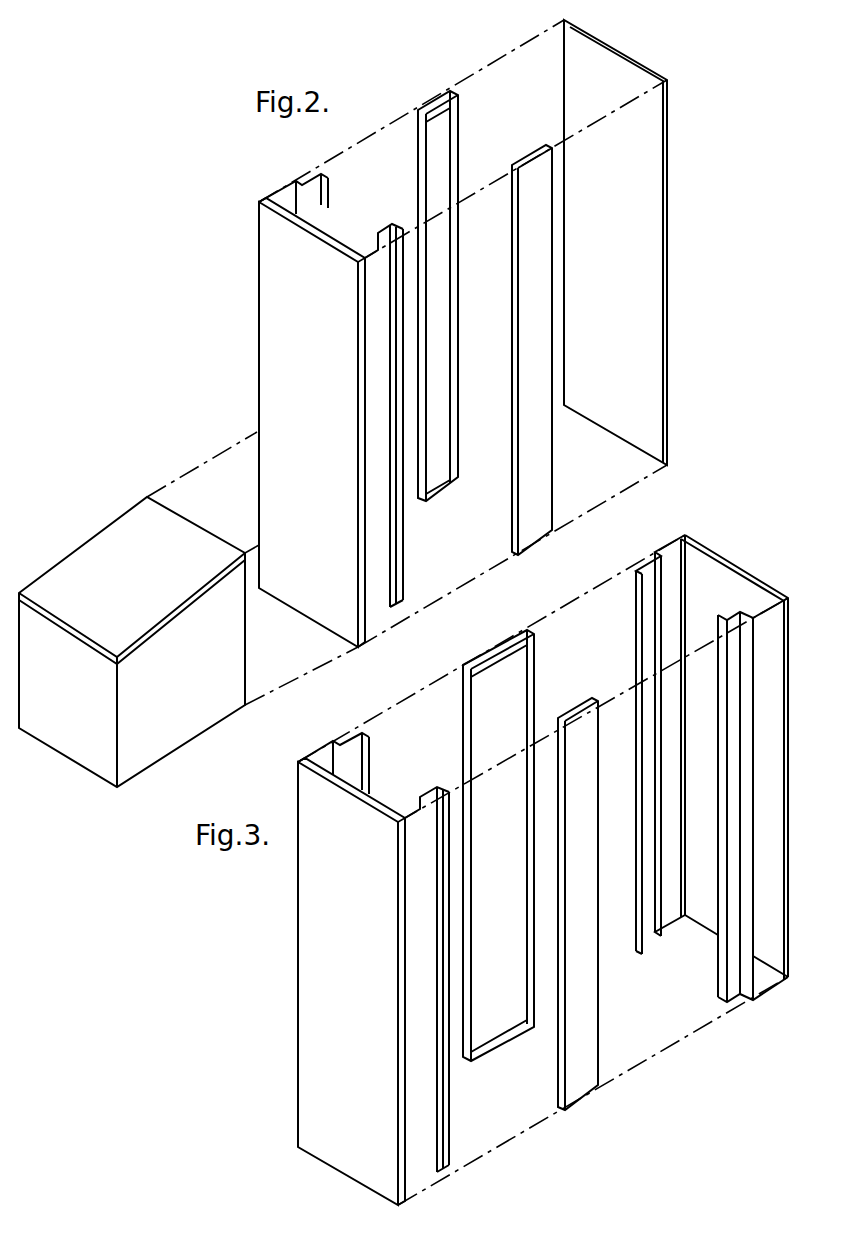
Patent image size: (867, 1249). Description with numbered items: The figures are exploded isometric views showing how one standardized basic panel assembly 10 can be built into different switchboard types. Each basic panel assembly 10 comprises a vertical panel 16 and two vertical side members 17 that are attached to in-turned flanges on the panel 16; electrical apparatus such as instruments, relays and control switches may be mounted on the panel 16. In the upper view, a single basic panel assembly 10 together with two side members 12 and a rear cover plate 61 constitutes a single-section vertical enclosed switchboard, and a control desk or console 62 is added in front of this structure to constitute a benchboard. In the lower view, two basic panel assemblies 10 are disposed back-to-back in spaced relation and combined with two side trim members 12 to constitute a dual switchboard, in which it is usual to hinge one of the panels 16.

In FIG. 2, the basic panel assembly 10 is at (265, 365).
In FIG. 3, the basic panel assembly 10 is at (305, 916).
In FIG. 2, the side member 12 is at (435, 106).
In FIG. 3, the side member 12 is at (488, 656).
In FIG. 2, the vertical panel 16 is at (258, 293).
In FIG. 2, the vertical side member 17 is at (282, 195).
In FIG. 2, the rear cover plate 61 is at (668, 320).
In FIG. 2, the control desk or console 62 is at (86, 547).